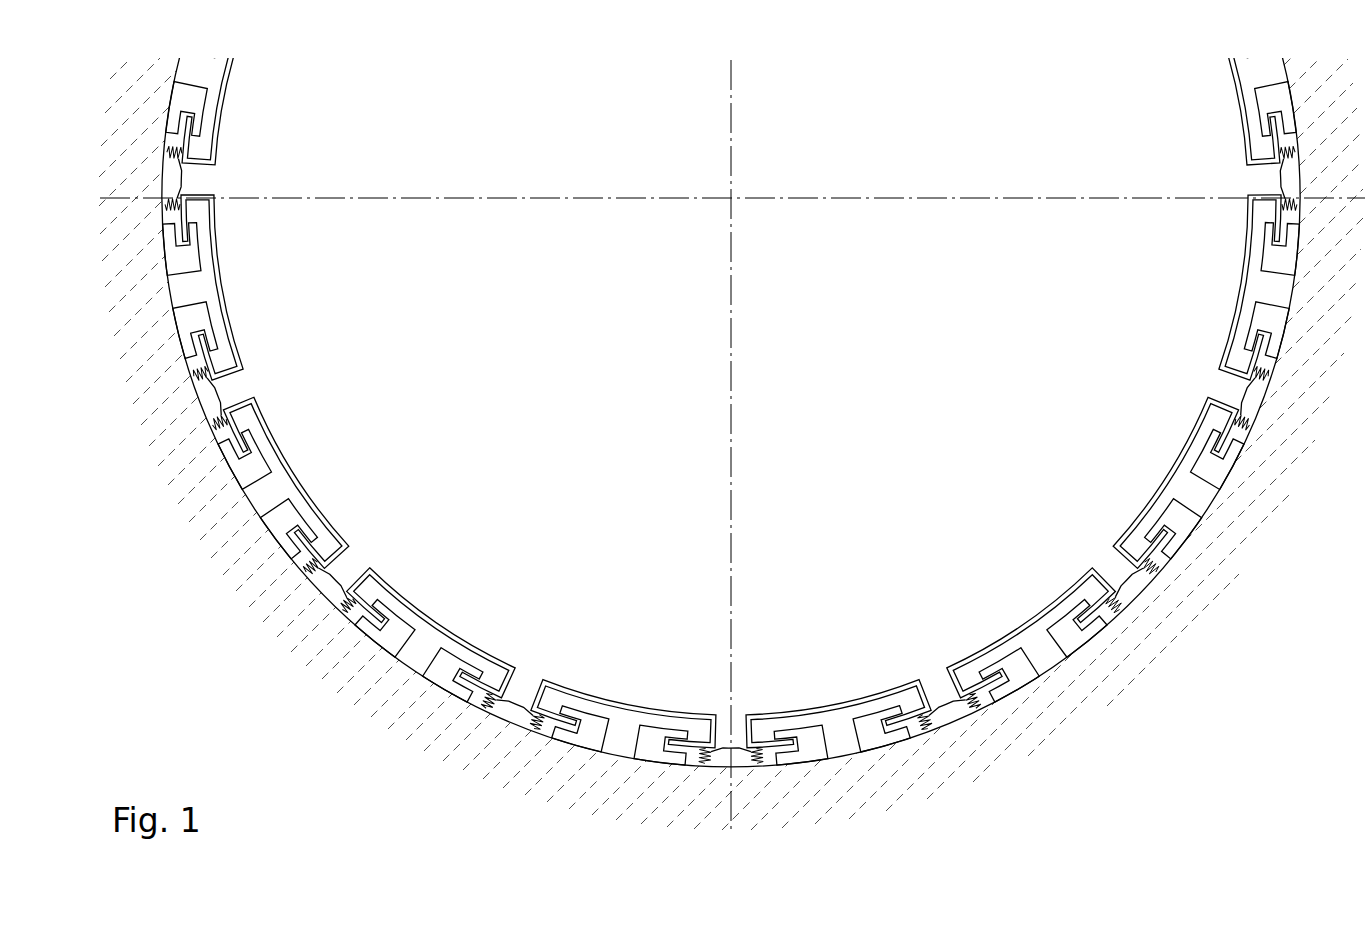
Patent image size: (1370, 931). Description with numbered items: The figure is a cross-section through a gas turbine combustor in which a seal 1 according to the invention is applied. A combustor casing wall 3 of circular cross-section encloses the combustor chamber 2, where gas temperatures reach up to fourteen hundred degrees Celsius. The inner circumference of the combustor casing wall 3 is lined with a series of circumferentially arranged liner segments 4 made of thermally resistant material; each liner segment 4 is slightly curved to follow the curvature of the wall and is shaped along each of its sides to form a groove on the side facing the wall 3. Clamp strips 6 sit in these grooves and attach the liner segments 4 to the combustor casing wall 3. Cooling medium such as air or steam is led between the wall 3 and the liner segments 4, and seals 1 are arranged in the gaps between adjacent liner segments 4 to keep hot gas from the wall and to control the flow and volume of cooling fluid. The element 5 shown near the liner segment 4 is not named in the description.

The connecting bridge piece 1 is at (1128, 582).
The housing / rotor 2 is at (843, 311).
The inner space 3 is at (732, 445).
The spring strip 4 is at (440, 620).
The segment body 5 is at (908, 700).
The locking block 6 is at (870, 730).